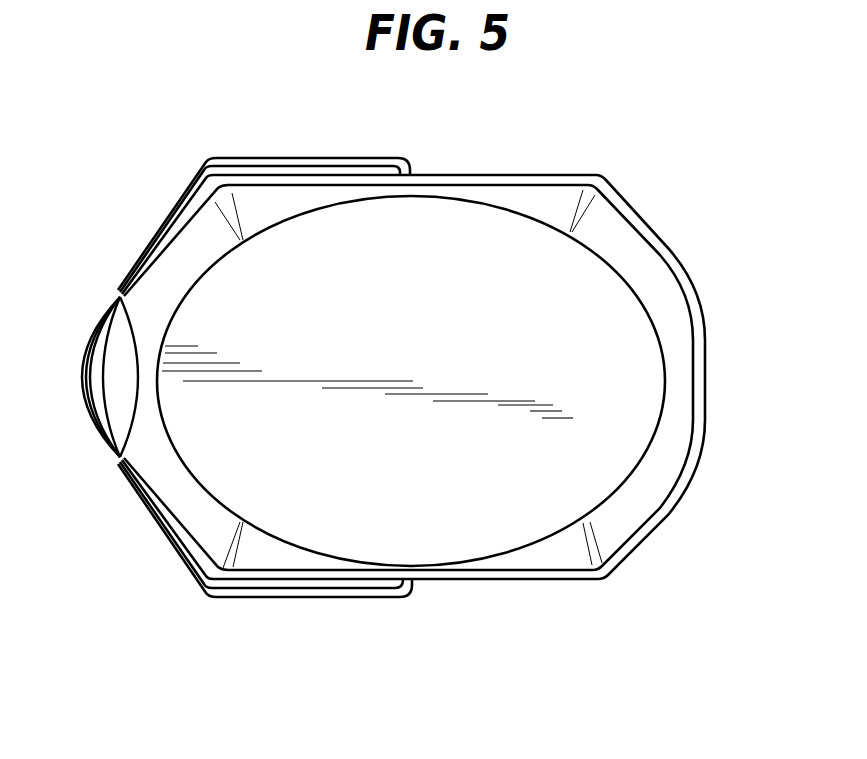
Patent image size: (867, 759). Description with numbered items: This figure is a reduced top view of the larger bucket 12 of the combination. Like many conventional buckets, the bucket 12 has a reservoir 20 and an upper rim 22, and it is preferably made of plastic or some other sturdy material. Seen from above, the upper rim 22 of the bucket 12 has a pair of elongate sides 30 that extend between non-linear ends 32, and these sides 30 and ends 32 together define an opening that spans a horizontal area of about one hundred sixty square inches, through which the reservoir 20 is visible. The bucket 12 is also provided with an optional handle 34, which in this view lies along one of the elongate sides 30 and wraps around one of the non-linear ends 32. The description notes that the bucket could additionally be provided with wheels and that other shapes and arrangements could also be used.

The bucket 12 is at (475, 583).
The reservoir 20 is at (415, 388).
The upper rim 22 is at (583, 573).
The elongate sides 30 is at (464, 178).
The non-linear ends 32 is at (103, 445).
The handle 34 is at (147, 220).